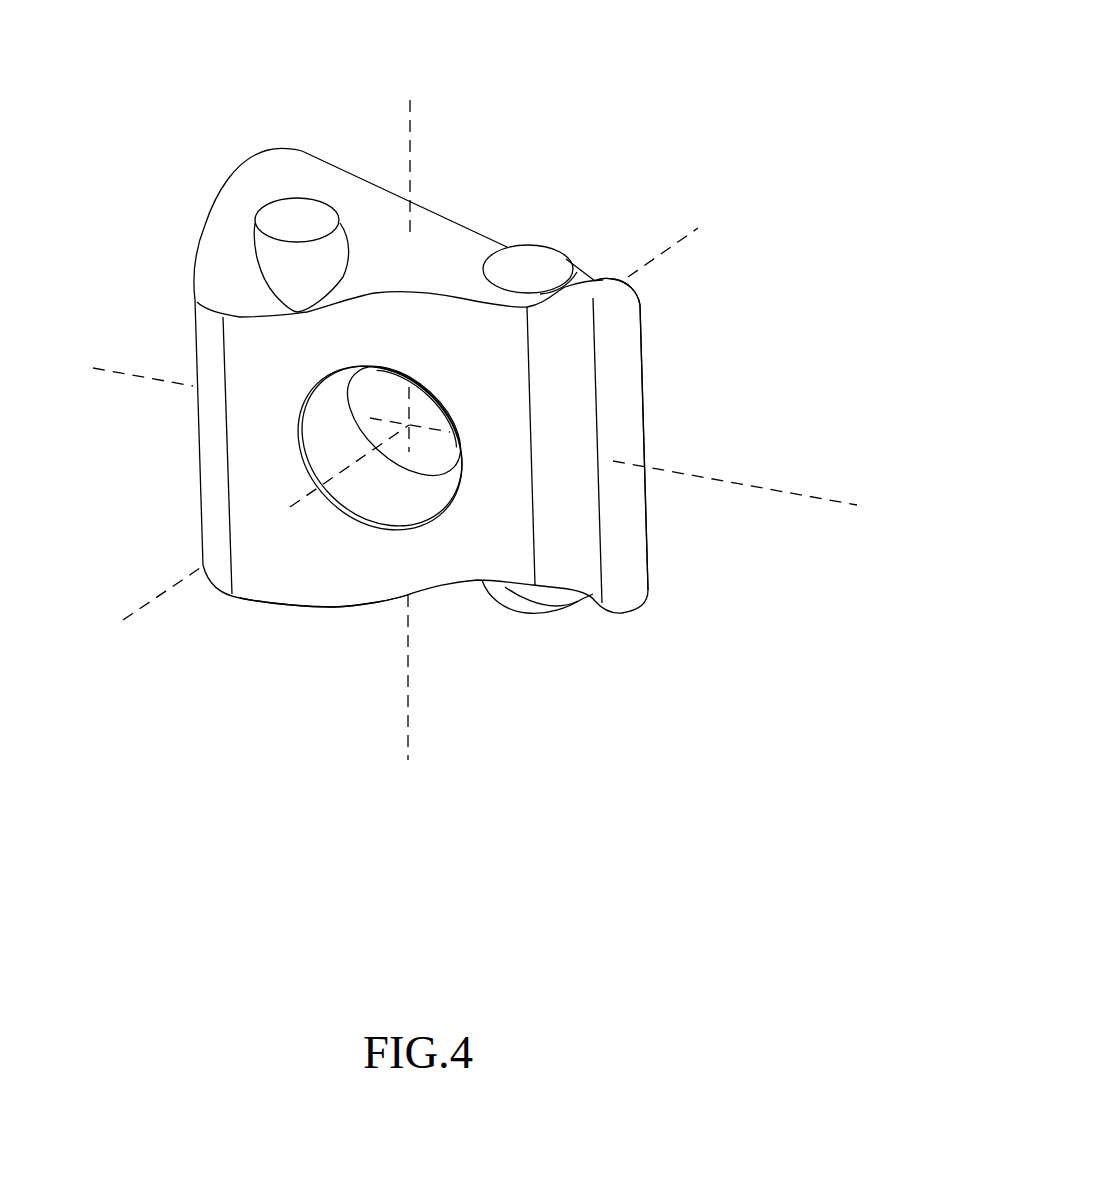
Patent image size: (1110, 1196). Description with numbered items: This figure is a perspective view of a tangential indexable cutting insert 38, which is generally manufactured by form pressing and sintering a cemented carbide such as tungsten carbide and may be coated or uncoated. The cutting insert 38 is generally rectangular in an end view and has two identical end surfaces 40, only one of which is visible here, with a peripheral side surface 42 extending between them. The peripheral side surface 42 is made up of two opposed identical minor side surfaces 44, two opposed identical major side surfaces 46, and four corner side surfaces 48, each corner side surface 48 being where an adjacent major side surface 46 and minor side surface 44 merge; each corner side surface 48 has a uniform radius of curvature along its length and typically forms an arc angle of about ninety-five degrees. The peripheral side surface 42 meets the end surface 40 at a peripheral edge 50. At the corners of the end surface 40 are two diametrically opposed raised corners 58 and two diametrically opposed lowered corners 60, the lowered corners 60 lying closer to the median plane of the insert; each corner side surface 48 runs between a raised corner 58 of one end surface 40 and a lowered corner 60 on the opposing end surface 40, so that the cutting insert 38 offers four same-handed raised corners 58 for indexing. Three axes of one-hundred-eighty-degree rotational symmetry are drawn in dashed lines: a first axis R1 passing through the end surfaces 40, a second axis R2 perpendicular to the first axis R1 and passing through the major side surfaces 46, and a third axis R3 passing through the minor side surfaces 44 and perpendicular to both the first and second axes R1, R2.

The cutting insert 38 is at (588, 153).
The end surface 40 is at (440, 230).
The peripheral side surface 42 is at (307, 550).
The minor side surface 44 is at (627, 525).
The major side surface 46 is at (440, 562).
The corner side surface 48 is at (567, 360).
The peripheral edge 50 is at (318, 155).
The raised corner 58 is at (587, 307).
The lowered corner 60 is at (195, 300).
The first axis R1 is at (420, 413).
The second axis R2 is at (392, 441).
The third axis R3 is at (497, 446).